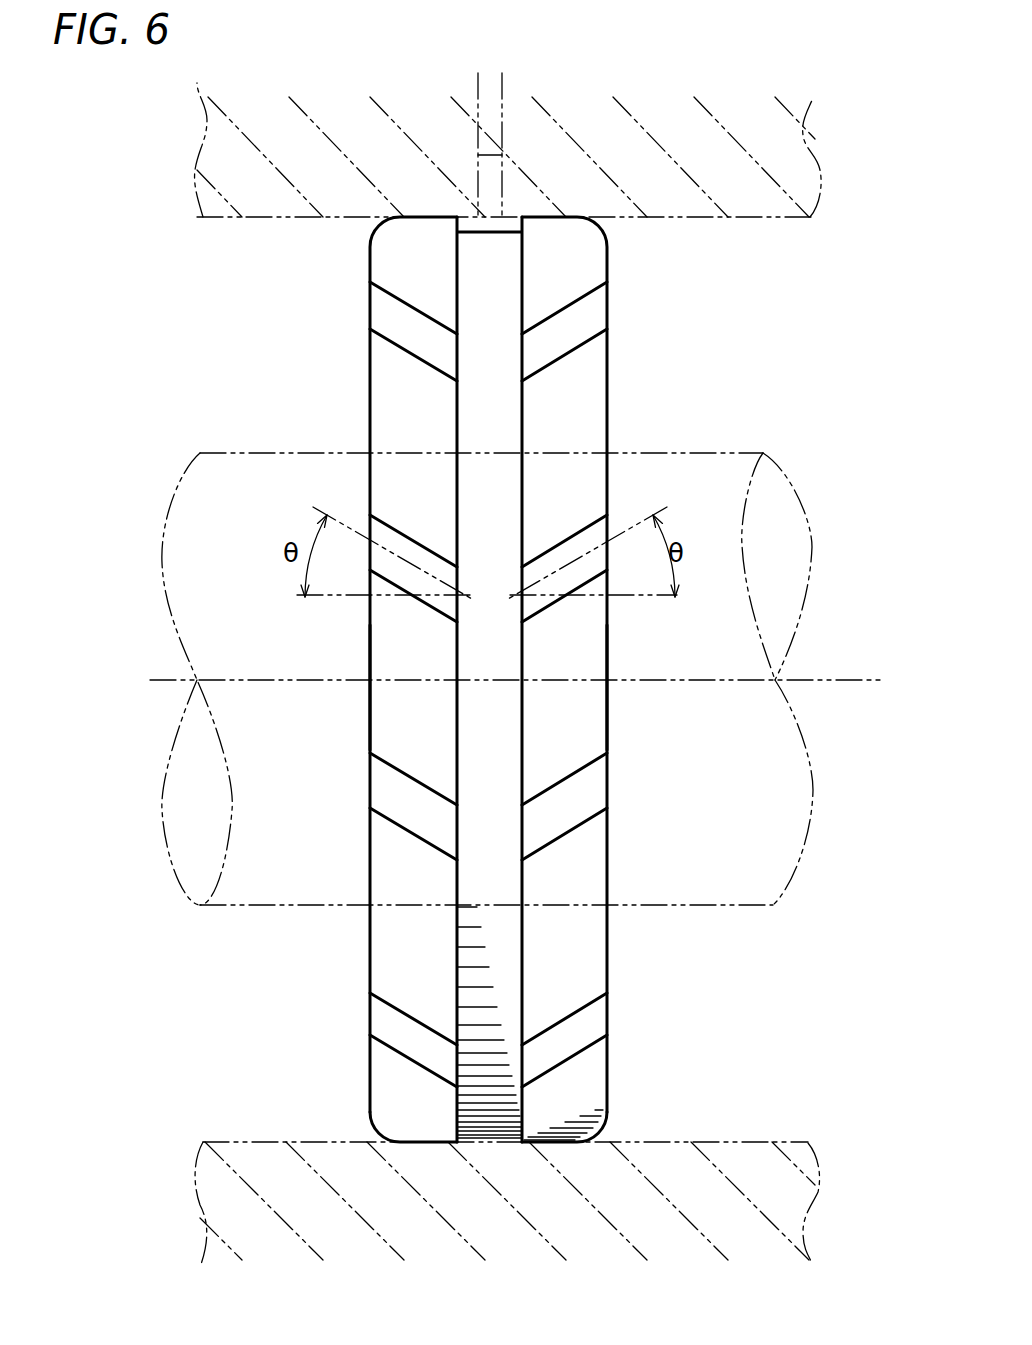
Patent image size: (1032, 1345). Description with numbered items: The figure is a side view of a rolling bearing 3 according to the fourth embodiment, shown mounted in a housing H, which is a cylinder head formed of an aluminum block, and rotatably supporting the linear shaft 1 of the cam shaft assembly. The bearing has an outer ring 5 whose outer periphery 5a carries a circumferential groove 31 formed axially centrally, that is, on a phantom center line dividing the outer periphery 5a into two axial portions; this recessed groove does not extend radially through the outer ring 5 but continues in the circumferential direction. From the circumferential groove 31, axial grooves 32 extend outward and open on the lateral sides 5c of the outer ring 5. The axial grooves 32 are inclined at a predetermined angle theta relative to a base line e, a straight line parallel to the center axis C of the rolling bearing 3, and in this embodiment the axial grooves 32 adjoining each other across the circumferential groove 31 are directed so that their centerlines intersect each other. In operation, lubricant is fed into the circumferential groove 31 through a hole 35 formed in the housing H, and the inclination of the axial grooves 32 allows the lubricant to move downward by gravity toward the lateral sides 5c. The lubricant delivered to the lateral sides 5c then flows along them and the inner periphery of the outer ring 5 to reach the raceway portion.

The shaft 1 is at (700, 455).
The rolling bearing 3 is at (368, 1107).
The outer ring 5 is at (456, 602).
The outer periphery 5a is at (393, 958).
The lateral side 5c is at (370, 786).
The circumferential groove 31 is at (506, 230).
The axial groove 32 is at (387, 303).
The hole 35 is at (476, 154).
The center axis C is at (826, 680).
The housing H is at (697, 1142).
The base line e is at (642, 597).